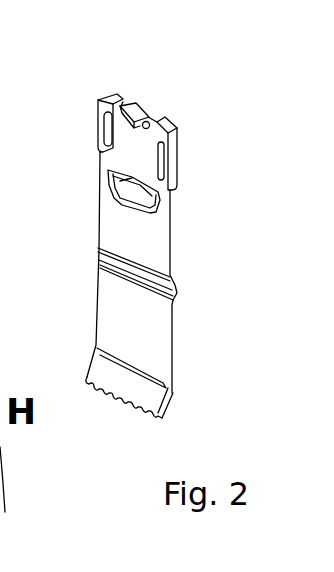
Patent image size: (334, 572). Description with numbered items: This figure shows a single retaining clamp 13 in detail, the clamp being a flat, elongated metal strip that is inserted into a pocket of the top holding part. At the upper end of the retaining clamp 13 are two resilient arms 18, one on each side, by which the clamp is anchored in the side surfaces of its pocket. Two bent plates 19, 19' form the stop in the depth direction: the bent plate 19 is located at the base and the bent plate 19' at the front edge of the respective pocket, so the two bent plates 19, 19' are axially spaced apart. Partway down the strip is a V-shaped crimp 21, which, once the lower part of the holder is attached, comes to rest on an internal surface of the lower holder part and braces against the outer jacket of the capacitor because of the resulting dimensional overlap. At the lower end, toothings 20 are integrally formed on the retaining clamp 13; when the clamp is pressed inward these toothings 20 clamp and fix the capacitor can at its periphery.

The retaining clamp 13 is at (152, 235).
The resilient arms 18 is at (92, 131).
The bent plate 19 is at (95, 224).
The bent plate 19' is at (161, 77).
The toothings 20 is at (125, 396).
The V-shaped crimps 21 is at (180, 283).